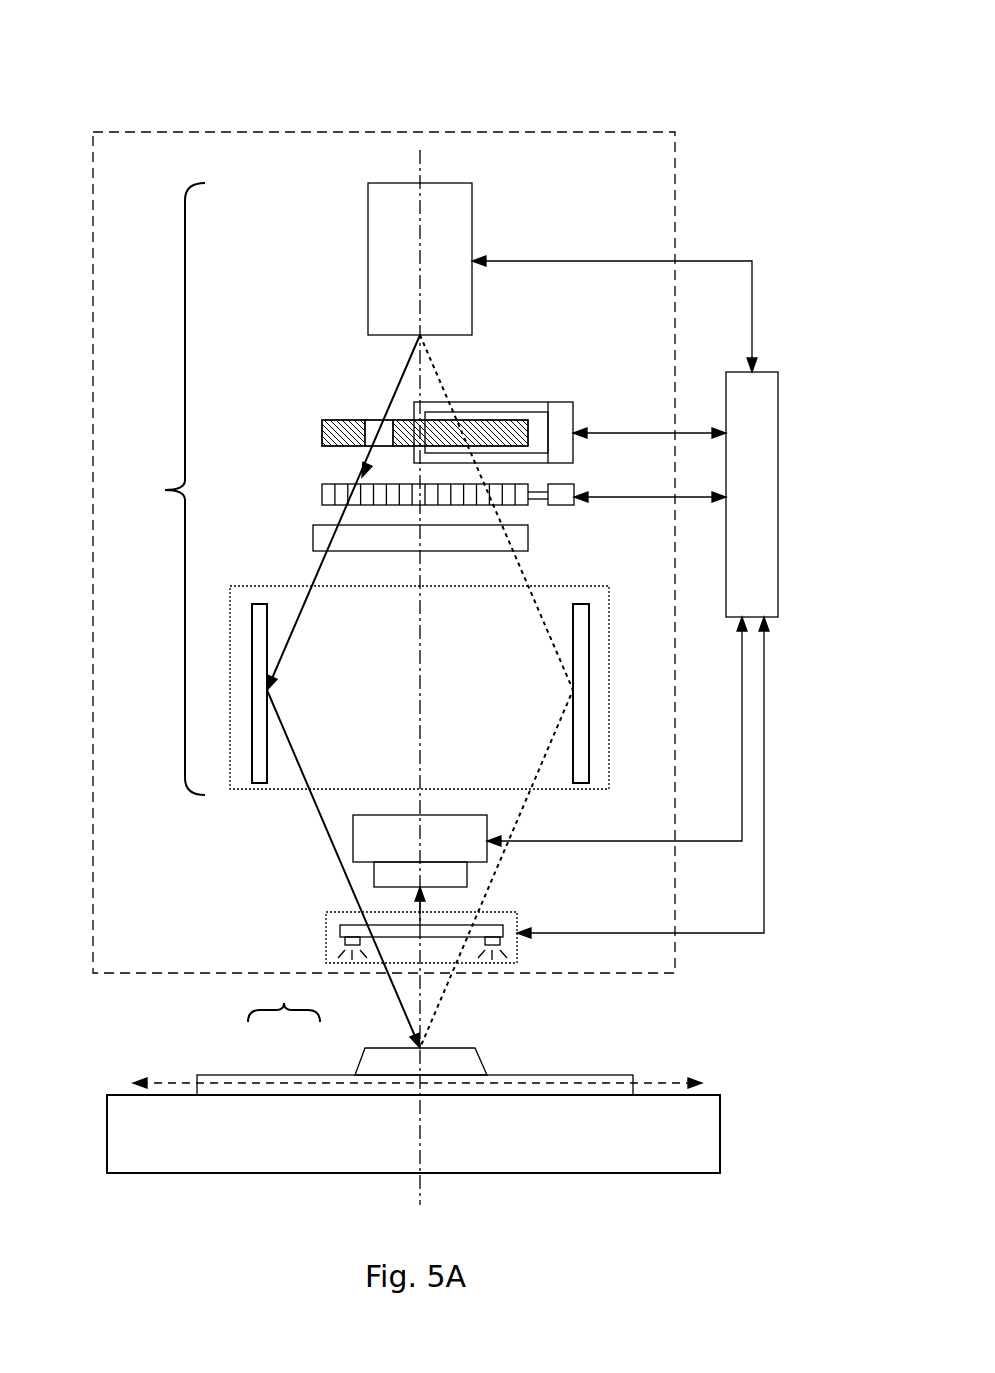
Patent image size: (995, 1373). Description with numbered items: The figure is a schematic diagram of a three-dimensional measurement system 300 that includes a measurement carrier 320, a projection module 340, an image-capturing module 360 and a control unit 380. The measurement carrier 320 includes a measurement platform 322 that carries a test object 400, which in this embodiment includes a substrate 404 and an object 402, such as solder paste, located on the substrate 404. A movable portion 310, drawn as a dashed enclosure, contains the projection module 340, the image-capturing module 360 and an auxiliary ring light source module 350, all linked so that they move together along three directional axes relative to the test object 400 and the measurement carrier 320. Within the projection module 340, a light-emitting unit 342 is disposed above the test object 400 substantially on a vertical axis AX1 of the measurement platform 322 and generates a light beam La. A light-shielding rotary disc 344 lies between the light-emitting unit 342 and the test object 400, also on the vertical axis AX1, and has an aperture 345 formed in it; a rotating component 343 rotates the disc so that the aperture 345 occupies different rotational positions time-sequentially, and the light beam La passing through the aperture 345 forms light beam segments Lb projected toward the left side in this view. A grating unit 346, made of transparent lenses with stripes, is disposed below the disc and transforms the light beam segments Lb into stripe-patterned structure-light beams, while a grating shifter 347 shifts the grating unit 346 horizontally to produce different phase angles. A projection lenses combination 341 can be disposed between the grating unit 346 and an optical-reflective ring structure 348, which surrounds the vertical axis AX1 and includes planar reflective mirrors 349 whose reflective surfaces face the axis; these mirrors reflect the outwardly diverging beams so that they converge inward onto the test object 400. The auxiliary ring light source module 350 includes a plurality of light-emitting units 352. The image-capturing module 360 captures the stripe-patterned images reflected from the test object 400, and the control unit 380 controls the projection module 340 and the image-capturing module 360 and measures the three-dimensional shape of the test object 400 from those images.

The three-dimensional measurement system 300 is at (255, 95).
The movable portion 310 is at (165, 132).
The vertical axis AX1 is at (418, 165).
The light-emitting unit 342 is at (368, 243).
The light beam La is at (398, 382).
The light beam segments Lb is at (367, 455).
The rotating component 343 is at (558, 402).
The light-shielding rotary disc 344 is at (320, 433).
The aperture 345 is at (368, 420).
The grating unit 346 is at (522, 484).
The grating shifter 347 is at (570, 505).
The projection lenses combination 341 is at (528, 542).
The optical-reflective ring structure 348 is at (293, 585).
The planar reflective mirrors 349 is at (252, 602).
The projection module 340 is at (159, 489).
The image-capturing module 360 is at (353, 840).
The auxiliary ring light source module 350 is at (517, 912).
The light-emitting units 352 is at (498, 943).
The control unit 380 is at (780, 388).
The test object 400 is at (284, 1002).
The object 402 is at (357, 1073).
The substrate 404 is at (228, 1074).
The measurement carrier 320 is at (752, 1105).
The measurement platform 322 is at (668, 1173).